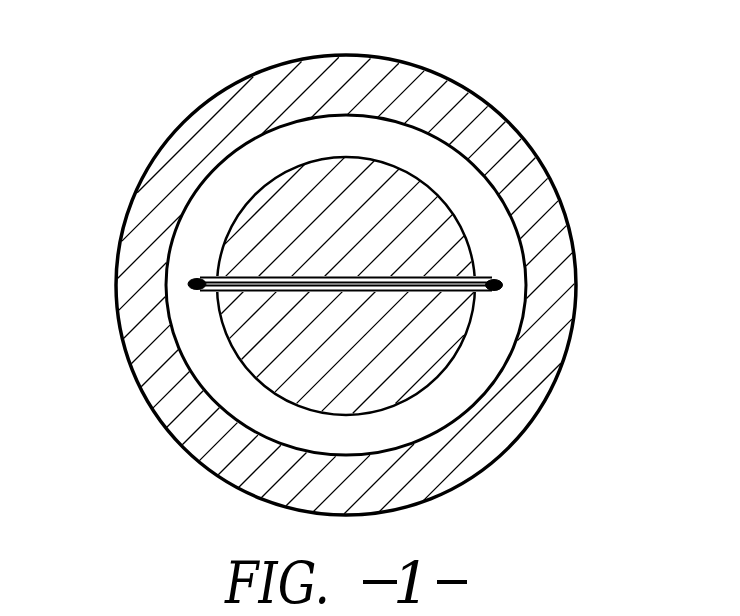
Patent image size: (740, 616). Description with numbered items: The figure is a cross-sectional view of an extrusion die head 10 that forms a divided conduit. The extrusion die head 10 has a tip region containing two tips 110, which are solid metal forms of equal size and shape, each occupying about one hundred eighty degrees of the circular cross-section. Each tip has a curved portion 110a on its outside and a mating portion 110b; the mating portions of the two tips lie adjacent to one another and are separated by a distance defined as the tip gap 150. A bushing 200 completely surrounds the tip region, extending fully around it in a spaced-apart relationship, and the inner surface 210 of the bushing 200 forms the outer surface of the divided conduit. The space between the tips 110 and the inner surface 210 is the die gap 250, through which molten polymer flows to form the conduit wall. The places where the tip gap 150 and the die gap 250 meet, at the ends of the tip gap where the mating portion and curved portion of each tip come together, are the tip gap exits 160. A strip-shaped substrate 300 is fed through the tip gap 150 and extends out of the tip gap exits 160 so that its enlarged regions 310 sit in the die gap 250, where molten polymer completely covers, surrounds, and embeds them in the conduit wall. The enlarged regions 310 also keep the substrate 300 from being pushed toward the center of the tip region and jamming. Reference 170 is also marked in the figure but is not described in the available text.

The extrusion die head 10 is at (583, 82).
The tips 110 is at (372, 234).
The curved portion 110a is at (280, 167).
The mating portion 110b is at (233, 218).
The tip gap 150 is at (229, 340).
The tip gap exits 160 is at (212, 291).
The inner insulation layer 170 is at (345, 157).
The bushing 200 is at (540, 224).
The inner surface 210 is at (503, 357).
The die gap 250 is at (435, 163).
The strip-shaped substrate 300 is at (442, 406).
The enlarged regions 310 is at (497, 287).